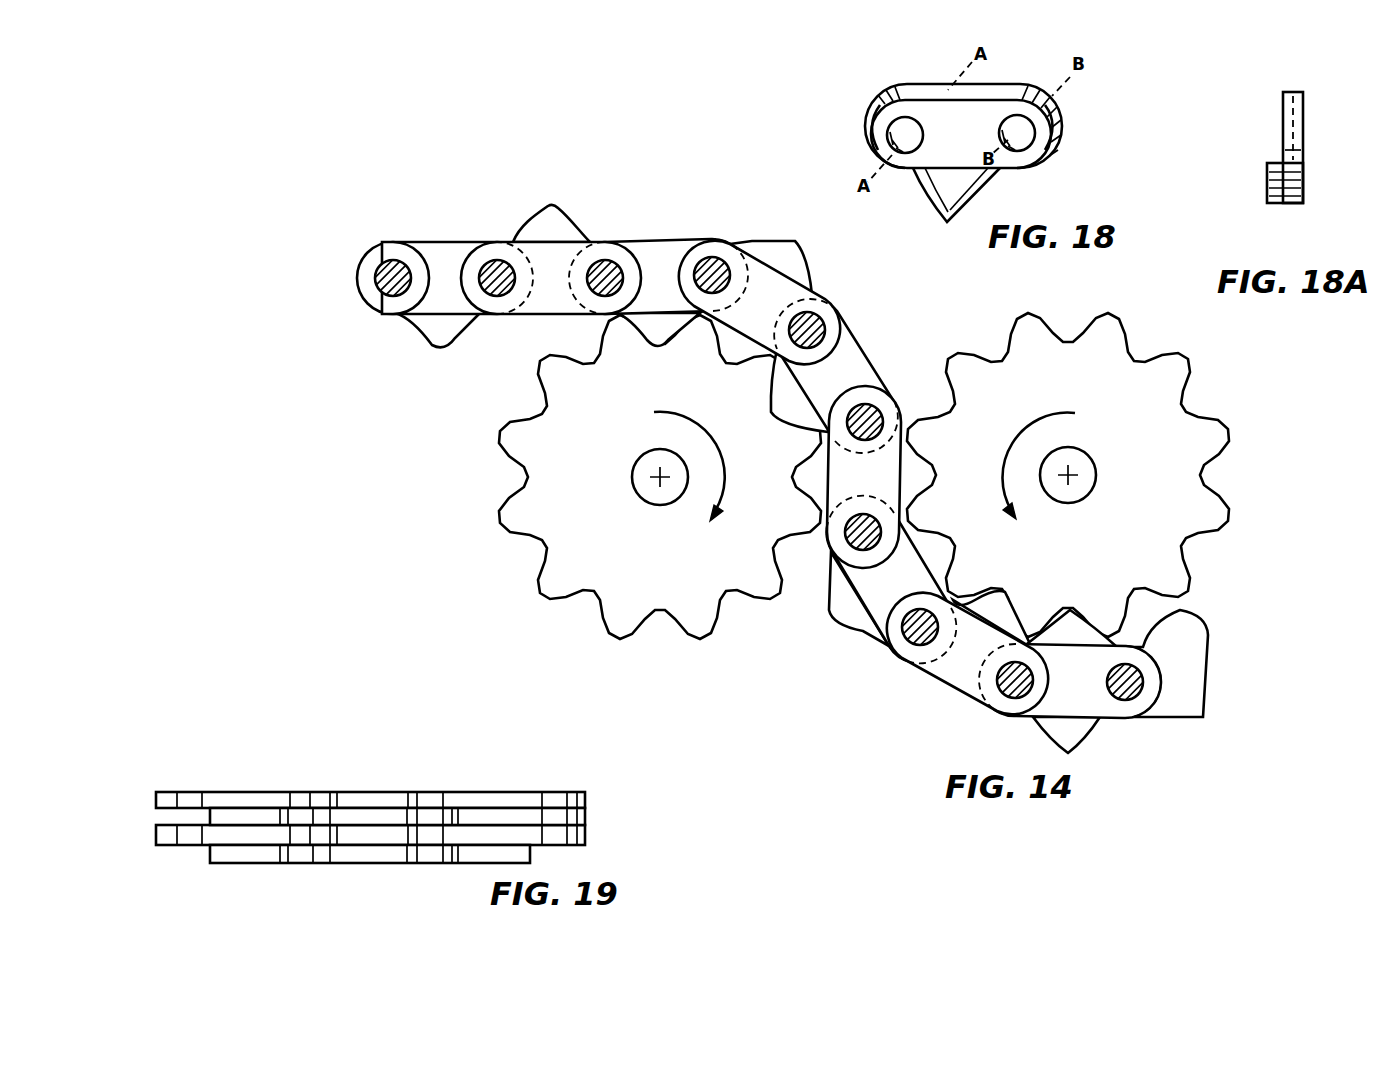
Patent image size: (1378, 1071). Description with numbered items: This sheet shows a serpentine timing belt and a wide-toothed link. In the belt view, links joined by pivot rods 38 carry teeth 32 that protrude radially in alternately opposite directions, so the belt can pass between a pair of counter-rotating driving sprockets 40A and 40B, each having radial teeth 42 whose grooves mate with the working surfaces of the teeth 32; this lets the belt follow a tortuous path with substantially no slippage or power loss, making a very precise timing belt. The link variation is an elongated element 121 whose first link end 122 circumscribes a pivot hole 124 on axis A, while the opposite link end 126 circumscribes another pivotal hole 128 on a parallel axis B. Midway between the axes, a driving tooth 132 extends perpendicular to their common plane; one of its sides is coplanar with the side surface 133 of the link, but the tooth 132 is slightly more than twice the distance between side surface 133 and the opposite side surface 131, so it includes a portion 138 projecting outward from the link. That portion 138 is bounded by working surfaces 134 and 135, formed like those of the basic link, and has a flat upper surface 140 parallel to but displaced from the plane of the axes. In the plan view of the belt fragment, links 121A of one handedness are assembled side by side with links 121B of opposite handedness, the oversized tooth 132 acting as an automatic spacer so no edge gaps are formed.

In FIG. 14, the tooth 32 is at (556, 228).
In FIG. 14, the pivot rod 38 is at (496, 262).
In FIG. 14, the driving sprocket 40A is at (635, 565).
In FIG. 14, the driving sprocket 40B is at (1145, 525).
In FIG. 14, the radial teeth 42 is at (842, 471).
In FIG. 18, the elongated element 121 is at (965, 154).
In FIG. 18A, the elongated element 121 is at (1287, 151).
In FIG. 19, the link 121A is at (248, 803).
In FIG. 19, the link 121B is at (390, 815).
In FIG. 18, the first link end 122 is at (883, 125).
In FIG. 18, the pivot hole 124 is at (903, 123).
In FIG. 18, the opposite link end 126 is at (1048, 138).
In FIG. 18, the pivotal hole 128 is at (1005, 118).
In FIG. 18A, the pivotal hole 128 is at (1305, 127).
In FIG. 18A, the side surface 131 is at (1283, 150).
In FIG. 19, the side surface 131 is at (205, 808).
In FIG. 18, the driving tooth 132 is at (958, 212).
In FIG. 18A, the driving tooth 132 is at (1296, 204).
In FIG. 18A, the side surface 133 is at (1304, 152).
In FIG. 19, the side surface 133 is at (220, 792).
In FIG. 18, the working surface 134 is at (923, 205).
In FIG. 18, the working surface 135 is at (990, 170).
In FIG. 18A, the working surface 135 is at (1274, 204).
In FIG. 18A, the portion 138 is at (1268, 185).
In FIG. 19, the portion 138 is at (383, 803).
In FIG. 18, the upper surface 140 is at (925, 185).
In FIG. 18A, the upper surface 140 is at (1268, 160).